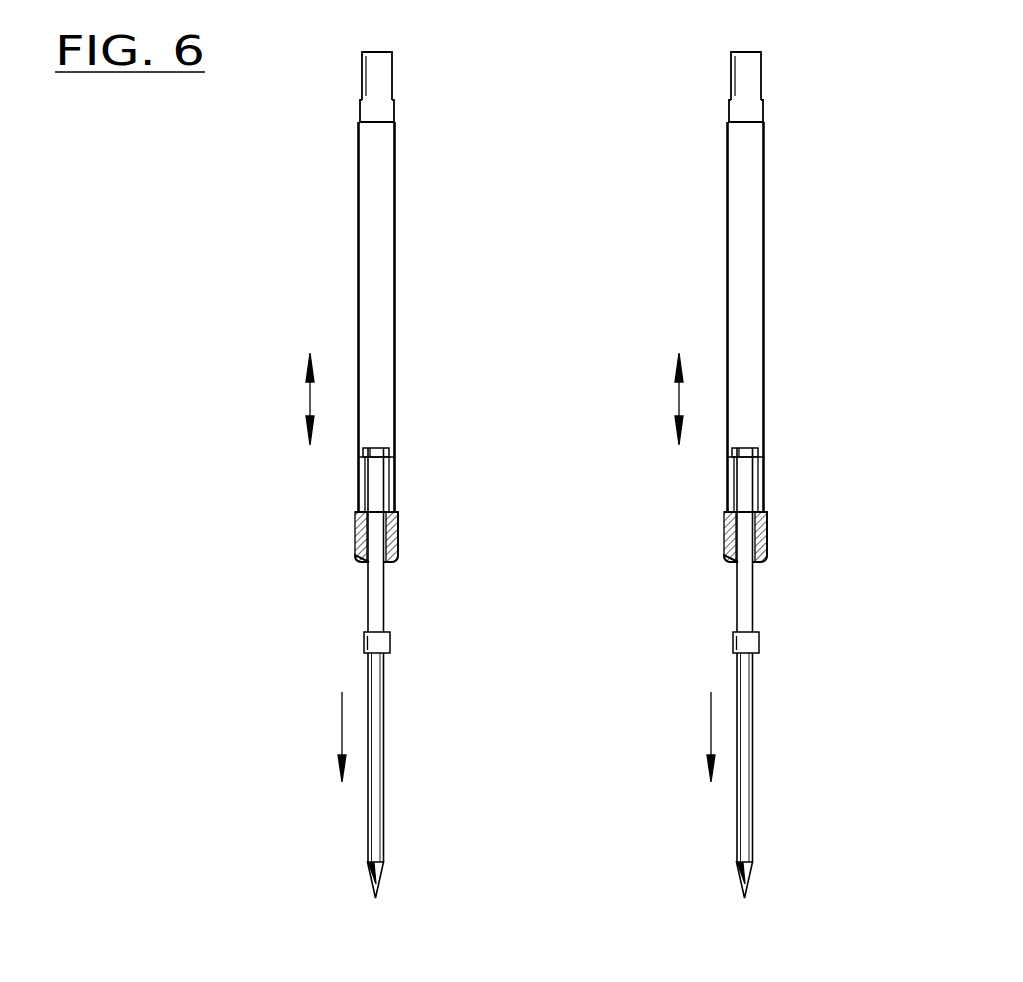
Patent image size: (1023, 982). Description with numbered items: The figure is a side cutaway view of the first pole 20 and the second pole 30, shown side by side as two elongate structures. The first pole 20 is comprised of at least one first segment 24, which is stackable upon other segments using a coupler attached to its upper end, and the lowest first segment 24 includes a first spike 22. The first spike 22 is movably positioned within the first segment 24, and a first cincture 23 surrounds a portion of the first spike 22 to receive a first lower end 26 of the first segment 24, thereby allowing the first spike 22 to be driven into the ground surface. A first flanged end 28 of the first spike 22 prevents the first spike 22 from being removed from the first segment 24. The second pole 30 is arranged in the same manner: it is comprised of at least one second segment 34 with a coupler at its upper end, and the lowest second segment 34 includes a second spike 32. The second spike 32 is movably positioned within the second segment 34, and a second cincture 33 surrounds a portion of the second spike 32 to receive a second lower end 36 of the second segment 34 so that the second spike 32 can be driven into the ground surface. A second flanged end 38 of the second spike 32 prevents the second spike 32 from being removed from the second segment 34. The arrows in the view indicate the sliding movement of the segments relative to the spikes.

The first pole 20 is at (400, 341).
The first spike 22 is at (382, 797).
The first cincture 23 is at (391, 633).
The first segment 24 is at (396, 271).
The first lower end 26 is at (355, 543).
The first flanged end 28 is at (384, 450).
The second pole 30 is at (769, 341).
The second spike 32 is at (752, 797).
The second cincture 33 is at (761, 633).
The second segment 34 is at (765, 260).
The second lower end 36 is at (724, 543).
The second flanged end 38 is at (753, 450).